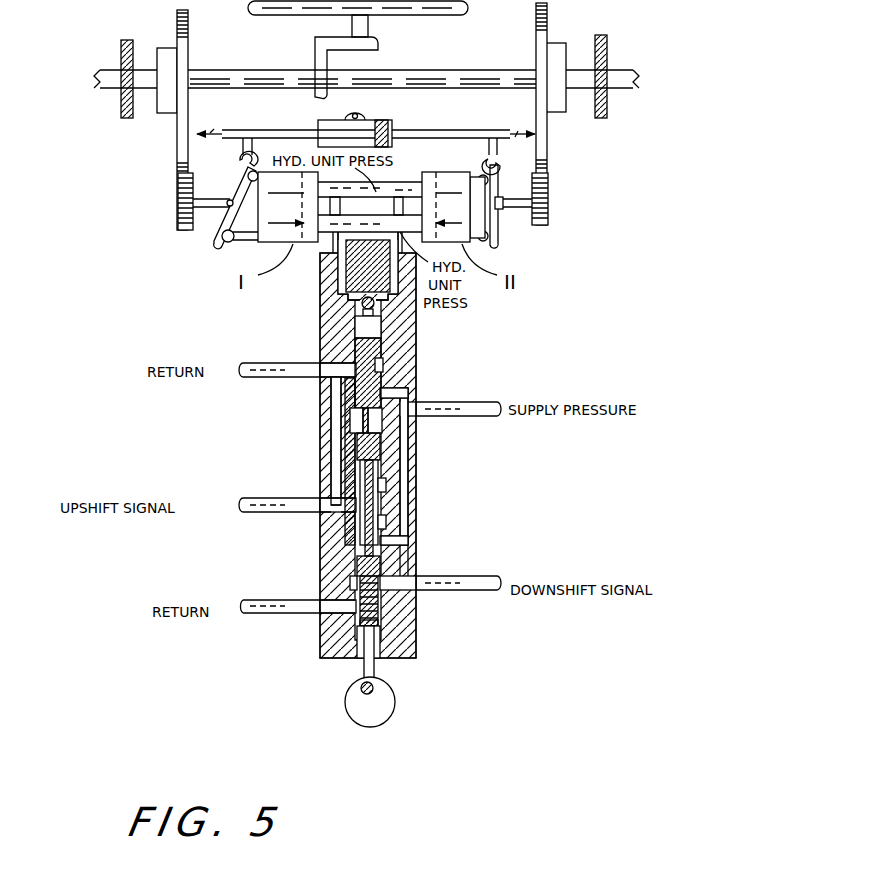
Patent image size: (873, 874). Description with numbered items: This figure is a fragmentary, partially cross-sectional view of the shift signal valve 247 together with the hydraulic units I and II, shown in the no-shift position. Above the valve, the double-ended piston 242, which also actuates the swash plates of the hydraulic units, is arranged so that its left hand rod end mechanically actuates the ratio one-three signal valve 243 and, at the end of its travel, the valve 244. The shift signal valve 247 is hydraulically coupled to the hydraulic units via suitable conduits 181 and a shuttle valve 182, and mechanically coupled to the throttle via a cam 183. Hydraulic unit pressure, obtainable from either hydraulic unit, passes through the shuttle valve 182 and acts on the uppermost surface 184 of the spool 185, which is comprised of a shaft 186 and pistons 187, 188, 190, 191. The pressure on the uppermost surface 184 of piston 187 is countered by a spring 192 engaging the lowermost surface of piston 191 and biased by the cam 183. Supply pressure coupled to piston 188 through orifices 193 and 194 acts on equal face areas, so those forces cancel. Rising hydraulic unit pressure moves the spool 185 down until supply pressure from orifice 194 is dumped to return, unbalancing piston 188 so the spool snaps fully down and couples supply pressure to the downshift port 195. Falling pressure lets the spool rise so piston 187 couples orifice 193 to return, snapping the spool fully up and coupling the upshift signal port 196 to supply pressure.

The conduits 181 is at (352, 285).
The shuttle valve 182 is at (378, 312).
The cam 183 is at (395, 697).
The uppermost surface 184 is at (353, 333).
The spool 185 is at (386, 470).
The shaft 186 is at (384, 545).
The piston 187 is at (378, 367).
The piston 188 is at (355, 422).
The piston 190 is at (380, 513).
The piston 191 is at (383, 583).
The spring 192 is at (378, 620).
The orifice 193 is at (402, 392).
The orifice 194 is at (390, 455).
The downshift port 195 is at (378, 605).
The upshift signal port 196 is at (355, 493).
The double-ended piston 242 is at (385, 120).
The ratio 1-3 signal valve 243 is at (238, 115).
The valve 244 is at (490, 117).
The shift signal valve 247 is at (320, 445).